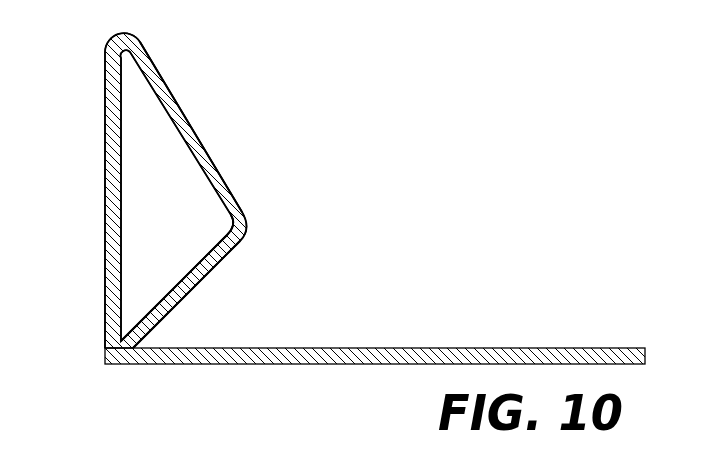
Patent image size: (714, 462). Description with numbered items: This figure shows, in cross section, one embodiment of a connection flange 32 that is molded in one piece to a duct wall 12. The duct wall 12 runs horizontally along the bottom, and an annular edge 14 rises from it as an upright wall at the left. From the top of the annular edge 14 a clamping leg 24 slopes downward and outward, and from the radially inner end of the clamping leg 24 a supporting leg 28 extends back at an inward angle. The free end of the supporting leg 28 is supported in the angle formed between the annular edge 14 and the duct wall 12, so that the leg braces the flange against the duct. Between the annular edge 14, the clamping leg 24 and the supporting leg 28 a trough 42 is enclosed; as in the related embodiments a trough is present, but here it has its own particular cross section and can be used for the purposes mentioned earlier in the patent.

The duct wall 12 is at (433, 348).
The annular edge 14 is at (108, 164).
The connection flange 32 is at (205, 121).
The clamping leg 24 is at (249, 205).
The supporting leg 28 is at (232, 263).
The trough 42 is at (180, 317).